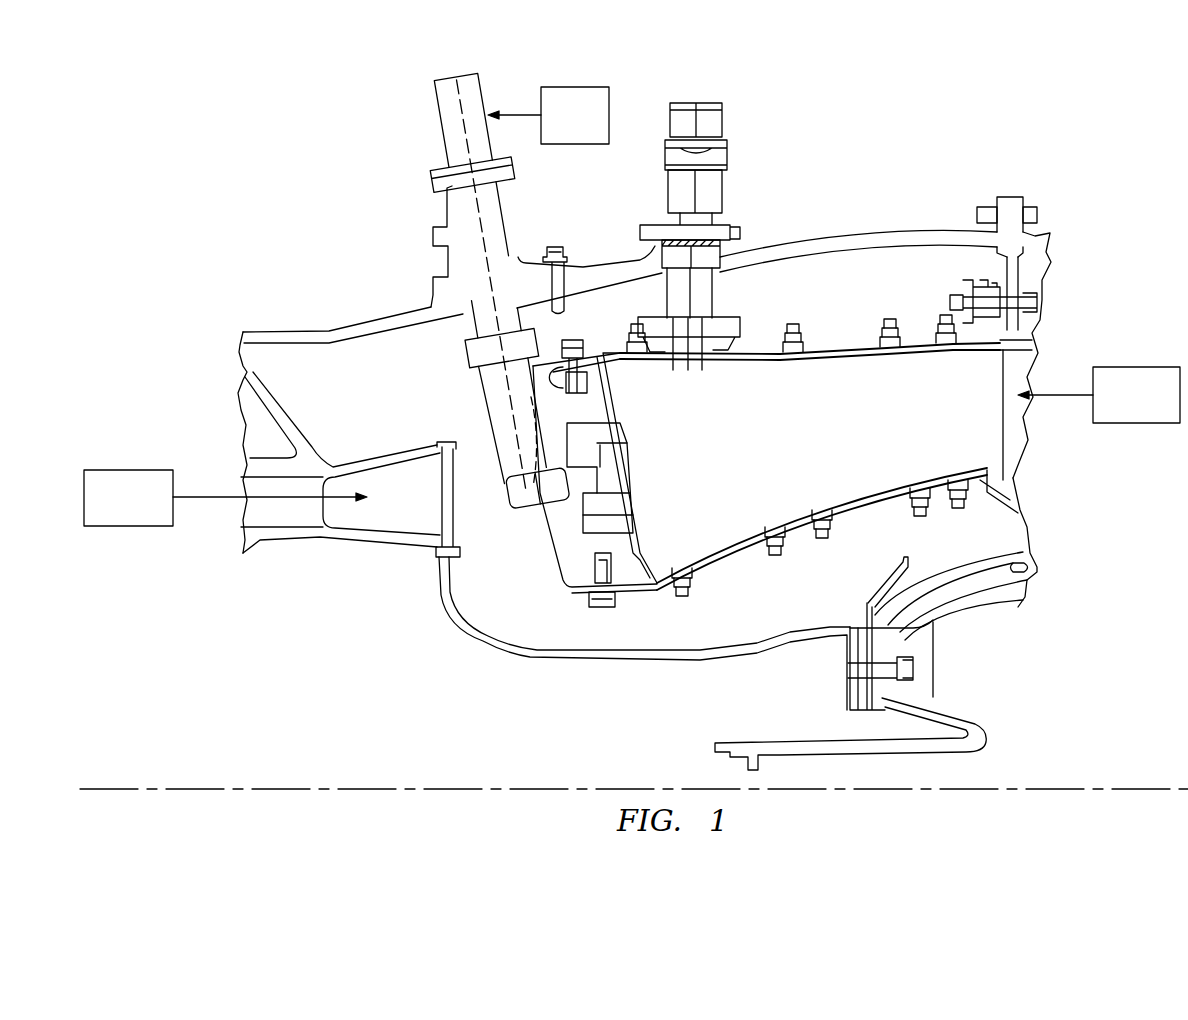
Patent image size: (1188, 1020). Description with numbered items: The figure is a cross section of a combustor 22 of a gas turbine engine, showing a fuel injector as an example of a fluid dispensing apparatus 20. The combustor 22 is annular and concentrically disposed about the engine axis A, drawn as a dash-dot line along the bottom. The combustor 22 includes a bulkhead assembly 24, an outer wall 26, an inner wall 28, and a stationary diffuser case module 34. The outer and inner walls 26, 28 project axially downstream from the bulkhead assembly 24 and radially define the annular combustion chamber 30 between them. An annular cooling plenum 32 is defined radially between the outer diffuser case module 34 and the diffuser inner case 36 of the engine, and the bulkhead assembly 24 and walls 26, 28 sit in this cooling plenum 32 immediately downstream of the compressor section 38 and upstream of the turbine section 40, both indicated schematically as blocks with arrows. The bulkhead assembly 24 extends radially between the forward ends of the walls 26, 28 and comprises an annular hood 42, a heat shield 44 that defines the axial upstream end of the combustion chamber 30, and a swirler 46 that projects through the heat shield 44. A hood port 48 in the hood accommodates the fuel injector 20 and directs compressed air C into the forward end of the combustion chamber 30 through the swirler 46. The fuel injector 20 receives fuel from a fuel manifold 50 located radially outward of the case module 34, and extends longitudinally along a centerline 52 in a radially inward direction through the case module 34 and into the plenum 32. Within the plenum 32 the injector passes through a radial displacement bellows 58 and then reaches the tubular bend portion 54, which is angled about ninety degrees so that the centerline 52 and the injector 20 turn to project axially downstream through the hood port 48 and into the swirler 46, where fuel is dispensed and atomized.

The fluid dispensing apparatus 20 is at (472, 389).
The combustor 22 is at (938, 142).
The bulkhead assembly 24 is at (535, 566).
The outer wall 26 is at (820, 351).
The inner wall 28 is at (855, 518).
The combustion chamber 30 is at (811, 453).
The cooling plenum 32 is at (449, 369).
The diffuser case module 34 is at (920, 232).
The diffuser inner case 36 is at (711, 661).
The compressor section 38 is at (144, 510).
The turbine section 40 is at (1152, 408).
The annular hood 42 is at (556, 585).
The heat shield 44 is at (645, 530).
The swirler 46 is at (612, 480).
The hood port 48 is at (535, 520).
The fuel manifold 50 is at (591, 128).
The centerline 52 is at (437, 110).
The bend portion 54 is at (516, 492).
The radial displacement bellows 58 is at (553, 333).
The engine axis A is at (1030, 787).
The compressed air C is at (207, 503).